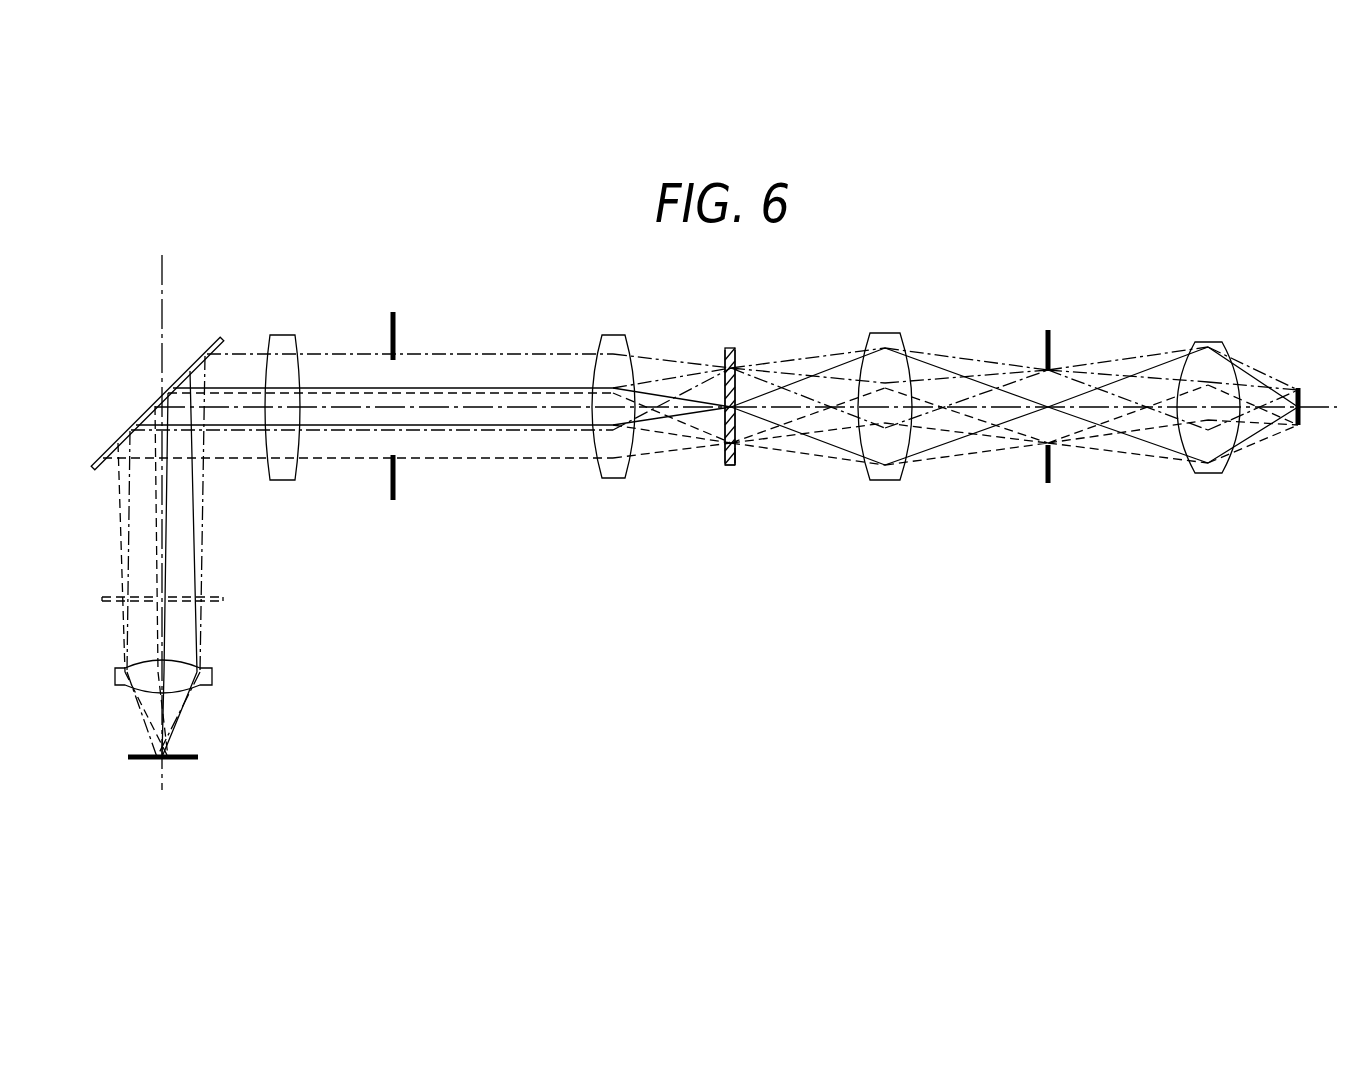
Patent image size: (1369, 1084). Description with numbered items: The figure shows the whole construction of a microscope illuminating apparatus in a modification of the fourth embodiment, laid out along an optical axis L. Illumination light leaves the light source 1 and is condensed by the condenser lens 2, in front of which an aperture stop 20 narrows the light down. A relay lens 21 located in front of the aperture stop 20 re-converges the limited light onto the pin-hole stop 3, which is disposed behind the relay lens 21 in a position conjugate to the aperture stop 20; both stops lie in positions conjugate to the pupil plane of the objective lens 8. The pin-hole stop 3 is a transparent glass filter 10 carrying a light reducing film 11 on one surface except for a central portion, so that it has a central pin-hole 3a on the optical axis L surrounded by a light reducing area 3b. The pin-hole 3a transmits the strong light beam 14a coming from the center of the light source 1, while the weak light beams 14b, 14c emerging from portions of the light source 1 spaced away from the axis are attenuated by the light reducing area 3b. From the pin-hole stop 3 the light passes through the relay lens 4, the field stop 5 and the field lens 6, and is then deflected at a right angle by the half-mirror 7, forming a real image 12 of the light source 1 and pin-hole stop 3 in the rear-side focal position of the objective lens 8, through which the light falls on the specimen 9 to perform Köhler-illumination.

The light source 1 is at (1300, 390).
The condenser lens 2 is at (1208, 342).
The pin-hole stop 3 is at (731, 347).
The pin-hole 3a is at (727, 402).
The light reducing area 3b is at (724, 430).
The relay lens 4 is at (612, 335).
The field stop 5 is at (393, 312).
The field lens 6 is at (283, 335).
The half-mirror 7 is at (100, 452).
The objective lens 8 is at (115, 676).
The specimen 9 is at (128, 757).
The glass filter 10 is at (735, 455).
The light reducing film 11 is at (729, 465).
The real image 12 is at (102, 598).
The strong light beam 14a is at (1138, 395).
The weak light beam 14b is at (1152, 352).
The weak light beam 14c is at (1148, 432).
The aperture stop 20 is at (1048, 330).
The relay lens 21 is at (884, 333).
The optical axis L is at (1323, 410).